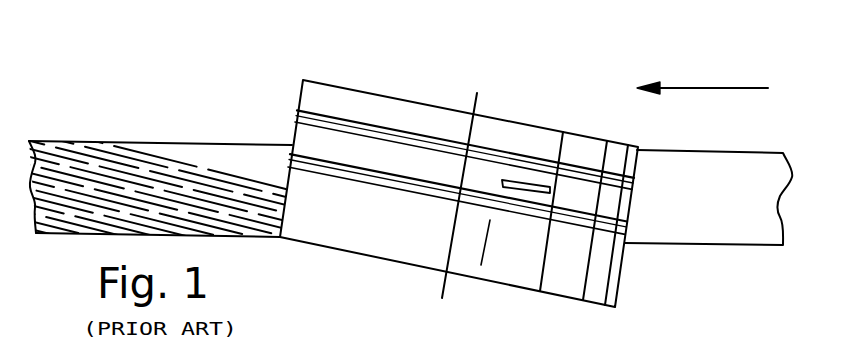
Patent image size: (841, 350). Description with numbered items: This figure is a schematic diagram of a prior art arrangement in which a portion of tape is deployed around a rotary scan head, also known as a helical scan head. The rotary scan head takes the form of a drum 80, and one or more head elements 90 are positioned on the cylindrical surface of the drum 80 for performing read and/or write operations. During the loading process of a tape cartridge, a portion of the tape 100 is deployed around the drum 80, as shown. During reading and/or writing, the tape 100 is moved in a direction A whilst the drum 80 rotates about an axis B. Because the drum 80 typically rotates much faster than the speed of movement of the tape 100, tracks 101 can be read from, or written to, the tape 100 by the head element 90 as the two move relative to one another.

The drum 80 is at (440, 105).
The head element 90 is at (517, 180).
The tape 100 is at (655, 147).
The tracks 101 is at (243, 146).
The direction of tape movement A is at (703, 82).
The axis of rotation B is at (440, 285).